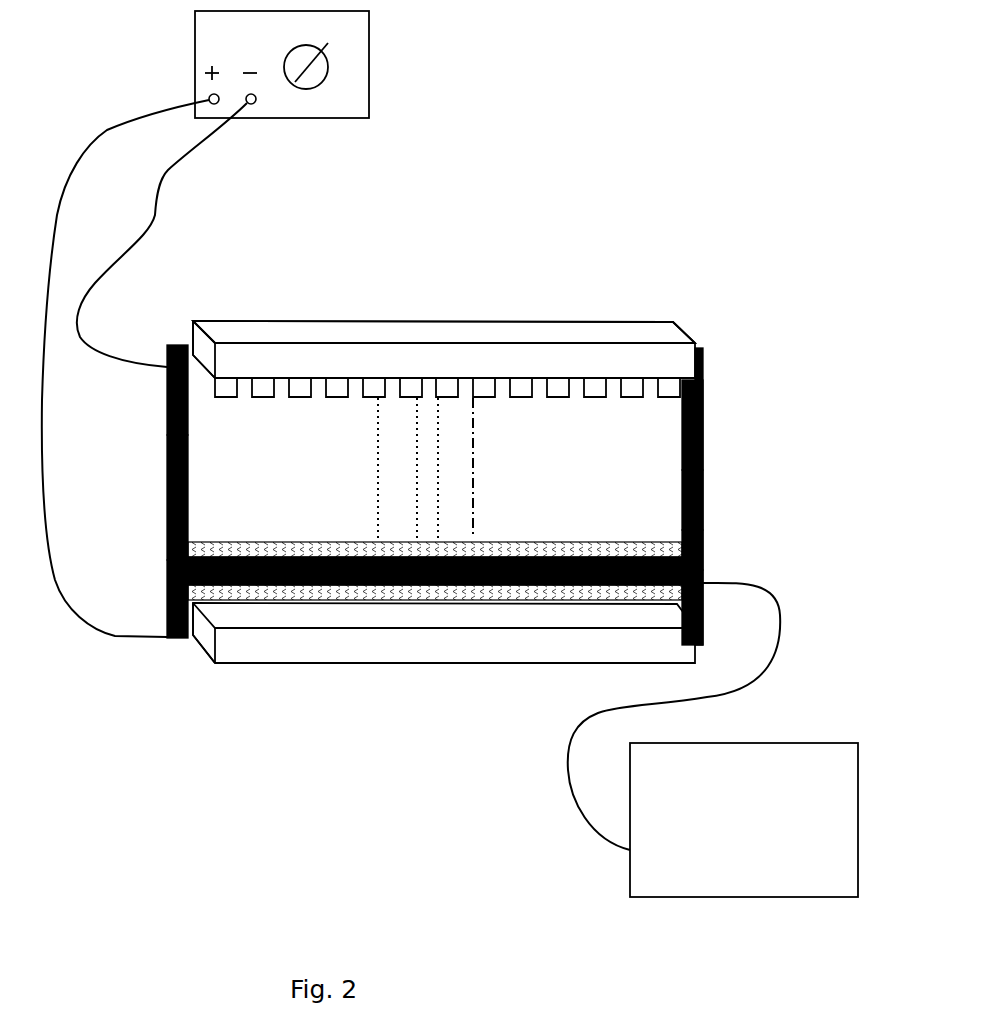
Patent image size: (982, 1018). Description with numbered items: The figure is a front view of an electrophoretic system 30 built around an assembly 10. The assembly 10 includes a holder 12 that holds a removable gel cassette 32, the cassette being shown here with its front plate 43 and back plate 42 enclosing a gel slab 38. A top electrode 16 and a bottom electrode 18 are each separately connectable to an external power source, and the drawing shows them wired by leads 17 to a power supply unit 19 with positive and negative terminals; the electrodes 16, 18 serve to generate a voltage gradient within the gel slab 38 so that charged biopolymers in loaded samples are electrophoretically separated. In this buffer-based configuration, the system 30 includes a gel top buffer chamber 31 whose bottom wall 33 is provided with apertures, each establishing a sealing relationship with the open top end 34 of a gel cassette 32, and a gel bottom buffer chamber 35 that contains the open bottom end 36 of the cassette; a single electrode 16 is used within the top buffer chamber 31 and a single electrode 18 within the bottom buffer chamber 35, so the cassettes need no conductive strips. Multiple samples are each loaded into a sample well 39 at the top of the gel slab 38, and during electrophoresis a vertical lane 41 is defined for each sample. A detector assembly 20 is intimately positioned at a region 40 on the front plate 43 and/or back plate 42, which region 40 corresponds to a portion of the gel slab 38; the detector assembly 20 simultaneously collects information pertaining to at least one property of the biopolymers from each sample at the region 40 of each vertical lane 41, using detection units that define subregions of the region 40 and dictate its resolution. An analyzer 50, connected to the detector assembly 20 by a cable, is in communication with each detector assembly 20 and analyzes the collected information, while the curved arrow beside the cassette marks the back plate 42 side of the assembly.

The assembly 10 is at (462, 464).
The holder 12 is at (703, 493).
The top electrode 16 is at (163, 375).
The lead wires 17 is at (158, 213).
The bottom electrode 18 is at (165, 623).
The power supply 19 is at (369, 86).
The detector assembly 20 is at (275, 547).
The system 30 is at (449, 268).
The gel top buffer chamber 31 is at (430, 300).
The gel cassette 32 is at (633, 457).
The bottom wall 33 is at (432, 322).
The open top end 34 is at (195, 340).
The gel bottom buffer chamber 35 is at (425, 696).
The open bottom end 36 is at (205, 640).
The gel slab 38 is at (648, 517).
The sample well 39 is at (298, 386).
The region 40 is at (703, 557).
The vertical lane 41 is at (400, 459).
The back plate 42 is at (740, 416).
The front plate 43 is at (165, 493).
The analyzer 50 is at (808, 753).